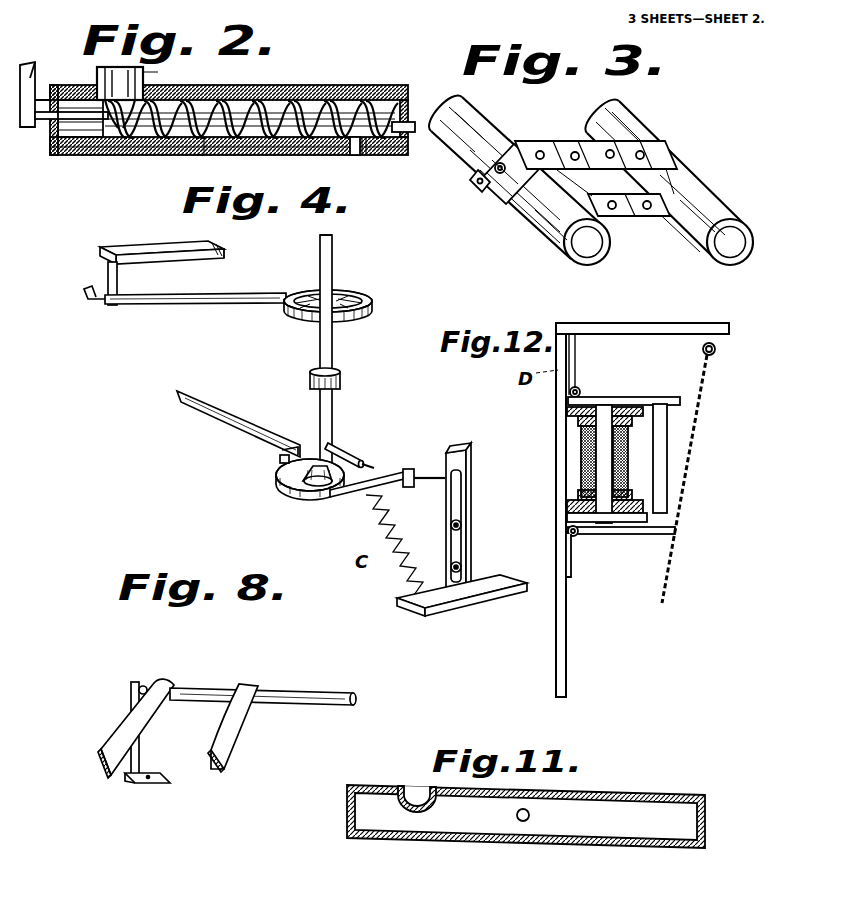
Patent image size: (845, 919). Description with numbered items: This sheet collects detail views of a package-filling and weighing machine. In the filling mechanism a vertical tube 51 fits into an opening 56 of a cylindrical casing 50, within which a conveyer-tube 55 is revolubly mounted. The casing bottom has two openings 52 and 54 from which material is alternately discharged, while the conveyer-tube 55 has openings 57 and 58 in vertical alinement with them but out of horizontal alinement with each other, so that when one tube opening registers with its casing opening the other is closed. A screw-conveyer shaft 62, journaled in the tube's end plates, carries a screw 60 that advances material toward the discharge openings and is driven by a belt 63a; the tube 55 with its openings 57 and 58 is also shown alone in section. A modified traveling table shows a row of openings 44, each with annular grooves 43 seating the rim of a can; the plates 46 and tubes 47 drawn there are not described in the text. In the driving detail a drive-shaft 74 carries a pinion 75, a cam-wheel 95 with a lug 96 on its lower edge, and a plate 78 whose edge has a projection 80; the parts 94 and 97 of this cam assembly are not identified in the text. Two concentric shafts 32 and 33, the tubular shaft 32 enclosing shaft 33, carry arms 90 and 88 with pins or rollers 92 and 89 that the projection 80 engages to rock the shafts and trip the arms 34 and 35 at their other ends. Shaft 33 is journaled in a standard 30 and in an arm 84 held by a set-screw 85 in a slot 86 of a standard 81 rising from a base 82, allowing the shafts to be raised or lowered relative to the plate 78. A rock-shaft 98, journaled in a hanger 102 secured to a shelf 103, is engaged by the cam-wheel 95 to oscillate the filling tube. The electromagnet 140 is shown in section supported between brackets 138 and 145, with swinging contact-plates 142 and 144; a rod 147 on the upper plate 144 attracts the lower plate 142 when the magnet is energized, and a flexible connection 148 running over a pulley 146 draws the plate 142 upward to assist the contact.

In FIG. 2, the cylindrical casing 50 is at (314, 90).
In FIG. 2, the vertical tube 51 is at (145, 85).
In FIG. 2, the opening 52 is at (364, 154).
In FIG. 2, the opening 54 is at (199, 152).
In FIG. 2, the conveyer-tube 55 is at (396, 92).
In FIG. 11, the conveyer-tube 55 is at (590, 790).
In FIG. 2, the opening 56 is at (100, 90).
In FIG. 11, the opening 57 is at (520, 822).
In FIG. 2, the opening 58 is at (354, 154).
In FIG. 11, the opening 58 is at (630, 846).
In FIG. 2, the screw 60 is at (251, 98).
In FIG. 2, the screw-conveyer shaft 62 is at (48, 125).
In FIG. 2, the belt 63a is at (38, 55).
In FIG. 3, the annular grooves 43 is at (502, 162).
In FIG. 3, the openings 44 is at (582, 168).
In FIG. 3, the clamp plate 46 is at (534, 141).
In FIG. 3, the tube 47 is at (603, 244).
In FIG. 4, the shelf or frame 103 is at (141, 246).
In FIG. 4, the hanger 102 is at (118, 280).
In FIG. 4, the rock-shaft 98 is at (205, 304).
In FIG. 4, the ring hub 94 is at (318, 296).
In FIG. 4, the cam-wheel 95 is at (366, 300).
In FIG. 4, the lug 96 is at (352, 313).
In FIG. 4, the spoke 97 is at (313, 312).
In FIG. 4, the drive-shaft 74 is at (333, 284).
In FIG. 4, the pinion 75 is at (341, 384).
In FIG. 4, the plate 78 is at (292, 485).
In FIG. 4, the pin or roller 89 is at (316, 488).
In FIG. 4, the tubular shaft 32 is at (265, 428).
In FIG. 8, the tubular shaft 32 is at (290, 692).
In FIG. 4, the arm 90 is at (282, 455).
In FIG. 4, the pin or roller 92 is at (280, 462).
In FIG. 4, the projection 80 is at (334, 492).
In FIG. 4, the inner shaft 33 is at (380, 468).
In FIG. 8, the inner shaft 33 is at (145, 686).
In FIG. 4, the arm 84 is at (430, 480).
In FIG. 4, the arm 88 is at (378, 500).
In FIG. 4, the standard 81 is at (468, 458).
In FIG. 4, the slot 86 is at (462, 498).
In FIG. 4, the set-screw 85 is at (462, 566).
In FIG. 4, the base 82 is at (502, 586).
In FIG. 8, the arm 35 is at (128, 742).
In FIG. 8, the arm 34 is at (246, 724).
In FIG. 8, the standard 30 is at (143, 760).
In FIG. 12, the contact-plate 142 is at (668, 534).
In FIG. 12, the contact-plate 144 is at (650, 398).
In FIG. 12, the bracket 145 is at (567, 410).
In FIG. 12, the electromagnet 140 is at (612, 470).
In FIG. 12, the rod 147 is at (668, 452).
In FIG. 12, the bracket 138 is at (567, 509).
In FIG. 12, the pulley 146 is at (717, 352).
In FIG. 12, the flexible connection 148 is at (704, 386).